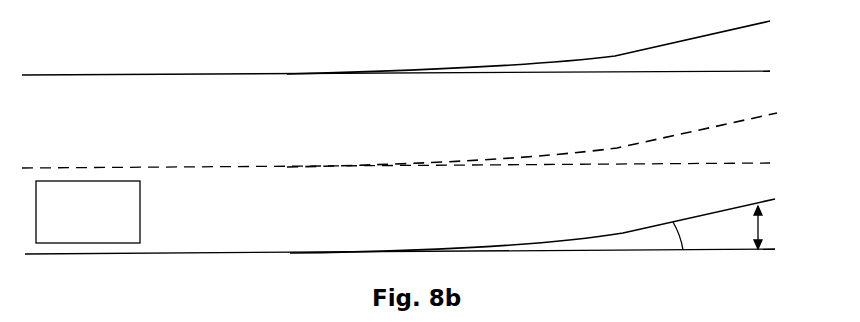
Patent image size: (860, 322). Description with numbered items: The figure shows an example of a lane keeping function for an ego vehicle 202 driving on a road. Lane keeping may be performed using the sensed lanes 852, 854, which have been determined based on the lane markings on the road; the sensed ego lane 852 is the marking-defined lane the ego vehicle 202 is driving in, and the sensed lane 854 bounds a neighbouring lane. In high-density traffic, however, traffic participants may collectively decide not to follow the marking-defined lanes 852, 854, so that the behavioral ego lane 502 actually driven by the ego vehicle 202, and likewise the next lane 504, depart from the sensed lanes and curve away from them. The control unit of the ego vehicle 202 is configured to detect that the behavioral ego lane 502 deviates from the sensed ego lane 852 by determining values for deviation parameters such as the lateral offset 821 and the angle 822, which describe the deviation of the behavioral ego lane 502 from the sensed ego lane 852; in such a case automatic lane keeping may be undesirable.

The ego vehicle 202 is at (87, 178).
The behavioral ego lane 502 is at (755, 142).
The next lane 504 is at (750, 52).
The lateral offset 821 is at (763, 223).
The angle 822 is at (658, 240).
The sensed ego lane 852 is at (218, 195).
The sensed lane 854 is at (367, 95).